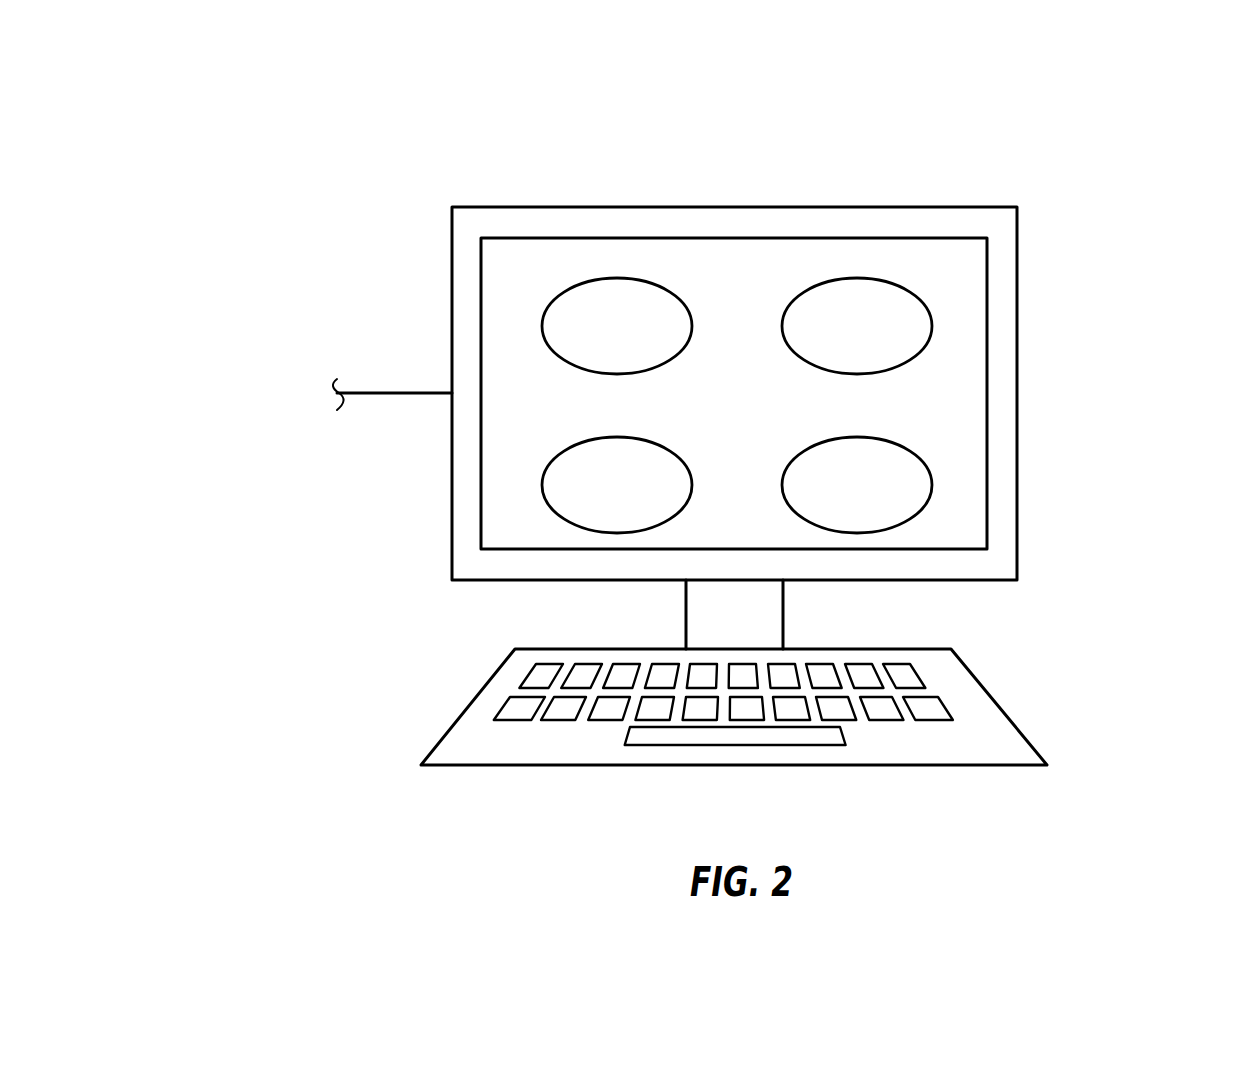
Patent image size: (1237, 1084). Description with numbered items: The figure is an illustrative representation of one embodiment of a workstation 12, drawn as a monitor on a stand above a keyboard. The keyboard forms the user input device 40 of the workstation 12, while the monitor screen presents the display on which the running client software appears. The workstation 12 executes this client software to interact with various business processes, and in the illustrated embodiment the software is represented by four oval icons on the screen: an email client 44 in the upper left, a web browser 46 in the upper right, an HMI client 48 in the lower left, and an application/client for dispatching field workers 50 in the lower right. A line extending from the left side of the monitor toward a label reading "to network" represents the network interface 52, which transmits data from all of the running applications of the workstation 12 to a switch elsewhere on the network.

The workstation 12 is at (1078, 171).
The user input device 40 is at (999, 693).
The email client 44 is at (606, 280).
The web browser 46 is at (843, 280).
The HMI client 48 is at (601, 438).
The application/client for dispatching field workers 50 is at (839, 438).
The network interface 52 is at (392, 393).